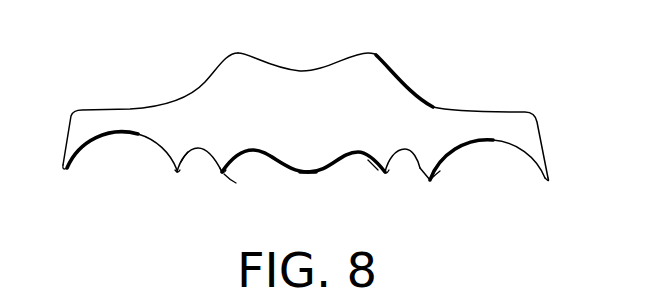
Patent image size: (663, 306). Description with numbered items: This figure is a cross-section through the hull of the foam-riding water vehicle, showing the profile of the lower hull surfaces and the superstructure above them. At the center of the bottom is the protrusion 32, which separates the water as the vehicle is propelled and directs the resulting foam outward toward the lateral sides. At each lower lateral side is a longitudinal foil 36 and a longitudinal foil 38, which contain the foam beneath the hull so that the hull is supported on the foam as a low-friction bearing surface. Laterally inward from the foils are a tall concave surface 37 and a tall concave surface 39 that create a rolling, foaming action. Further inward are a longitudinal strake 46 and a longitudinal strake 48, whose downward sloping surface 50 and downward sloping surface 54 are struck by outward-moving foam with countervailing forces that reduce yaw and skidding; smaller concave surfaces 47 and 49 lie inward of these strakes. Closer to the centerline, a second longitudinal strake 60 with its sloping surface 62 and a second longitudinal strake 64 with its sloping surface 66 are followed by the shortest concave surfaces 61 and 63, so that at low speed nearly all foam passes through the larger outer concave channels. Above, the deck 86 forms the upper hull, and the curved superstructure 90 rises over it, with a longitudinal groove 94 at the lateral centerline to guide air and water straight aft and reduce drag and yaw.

The protrusion 32 is at (307, 174).
The longitudinal foil 36 is at (64, 172).
The concave surface 37 is at (130, 133).
The longitudinal foil 38 is at (548, 181).
The concave surface 39 is at (487, 138).
The longitudinal strake 46 is at (176, 173).
The concave surface 47 is at (198, 148).
The longitudinal strake 48 is at (430, 181).
The concave surface 49 is at (407, 149).
The downward sloping surface 50 is at (185, 165).
The downward sloping surface 54 is at (421, 171).
The second longitudinal strake 60 is at (222, 175).
The concave surface 61 is at (255, 150).
The downward sloping surface 62 is at (230, 179).
The concave surface 63 is at (362, 151).
The second longitudinal strake 64 is at (387, 175).
The downward sloping surface 66 is at (375, 163).
The deck 86 is at (123, 108).
The superstructure 90 is at (393, 74).
The longitudinal groove 94 is at (323, 69).